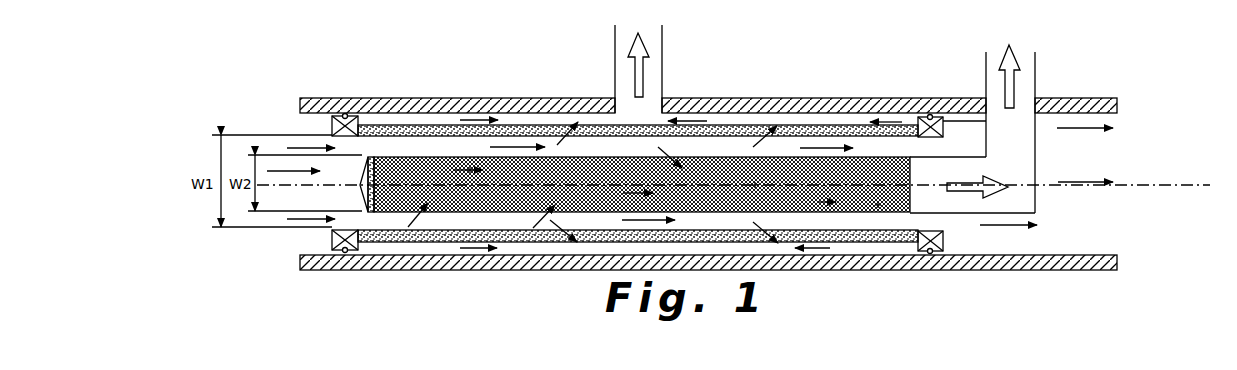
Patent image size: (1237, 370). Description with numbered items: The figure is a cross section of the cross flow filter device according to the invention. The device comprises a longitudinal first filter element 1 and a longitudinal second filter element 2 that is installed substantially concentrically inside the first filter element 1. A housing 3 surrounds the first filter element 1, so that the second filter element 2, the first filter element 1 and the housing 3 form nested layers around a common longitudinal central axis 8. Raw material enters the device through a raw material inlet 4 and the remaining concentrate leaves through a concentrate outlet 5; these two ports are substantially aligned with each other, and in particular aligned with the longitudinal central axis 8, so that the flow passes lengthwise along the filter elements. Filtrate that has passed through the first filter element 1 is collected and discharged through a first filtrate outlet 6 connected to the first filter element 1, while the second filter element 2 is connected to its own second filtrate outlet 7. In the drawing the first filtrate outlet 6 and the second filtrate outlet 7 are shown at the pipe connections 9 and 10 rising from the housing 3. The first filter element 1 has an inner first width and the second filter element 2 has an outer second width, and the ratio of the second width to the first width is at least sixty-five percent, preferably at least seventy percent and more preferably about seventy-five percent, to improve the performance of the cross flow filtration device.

The first filter element 1 is at (797, 130).
The second filter element 2 is at (878, 214).
The housing 3 is at (1085, 99).
The raw material inlet 4 is at (351, 180).
The concentrate outlet 5 is at (1056, 183).
The first filtrate outlet 6 is at (648, 123).
The second filtrate outlet 7 is at (935, 181).
The longitudinal central axis 8 is at (1233, 202).
The first outlet pipe 9 is at (663, 77).
The second outlet pipe 10 is at (1037, 87).